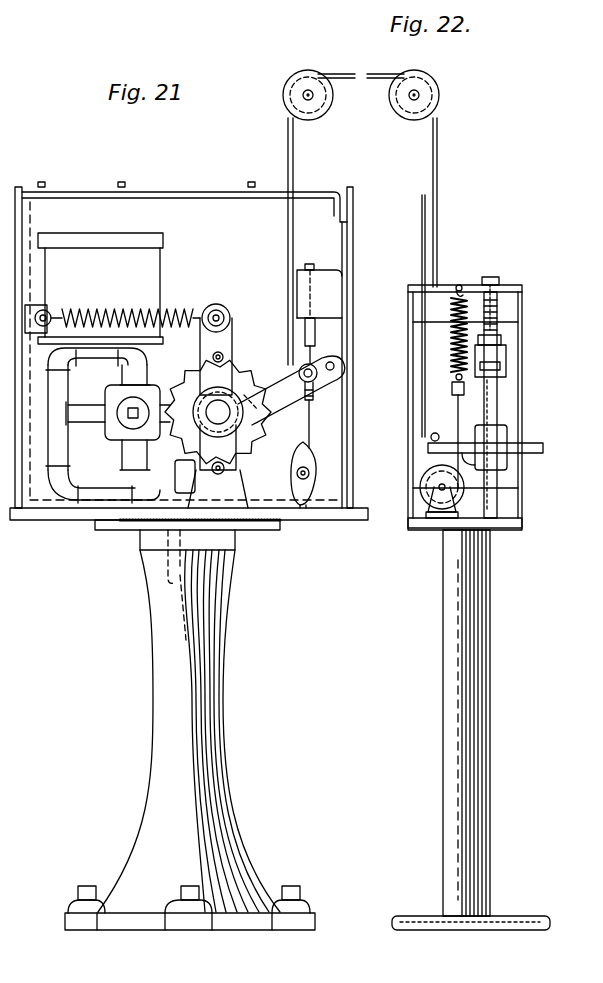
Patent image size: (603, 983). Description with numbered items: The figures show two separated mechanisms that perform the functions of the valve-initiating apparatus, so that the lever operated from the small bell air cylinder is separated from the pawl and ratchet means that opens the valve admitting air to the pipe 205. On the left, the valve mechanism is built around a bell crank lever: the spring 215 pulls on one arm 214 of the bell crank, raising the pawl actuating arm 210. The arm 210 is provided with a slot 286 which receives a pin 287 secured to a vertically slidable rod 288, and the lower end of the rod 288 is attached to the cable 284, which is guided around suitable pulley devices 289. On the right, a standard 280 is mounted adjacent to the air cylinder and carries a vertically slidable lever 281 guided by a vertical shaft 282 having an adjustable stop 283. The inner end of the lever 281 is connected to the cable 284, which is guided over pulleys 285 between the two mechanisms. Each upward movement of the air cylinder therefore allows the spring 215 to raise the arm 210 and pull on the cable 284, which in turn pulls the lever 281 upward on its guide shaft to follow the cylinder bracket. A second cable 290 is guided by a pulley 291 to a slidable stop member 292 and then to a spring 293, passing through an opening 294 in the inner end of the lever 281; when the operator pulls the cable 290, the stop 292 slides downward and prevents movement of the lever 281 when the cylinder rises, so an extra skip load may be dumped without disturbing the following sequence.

In FIG. 21, the pipe 205 is at (130, 416).
In FIG. 21, the pawl actuating arm 210 is at (272, 372).
In FIG. 21, the arm of the bell crank lever 214 is at (228, 327).
In FIG. 21, the spring 215 is at (175, 310).
In FIG. 22, the standard 280 is at (491, 717).
In FIG. 22, the vertically slidable lever 281 is at (535, 443).
In FIG. 22, the vertical shaft 282 is at (497, 406).
In FIG. 22, the adjustable stop 283 is at (497, 348).
In FIG. 22, the cable 284 is at (439, 243).
In FIG. 21, the pulleys 285 is at (305, 72).
In FIG. 22, the pulleys 285 is at (418, 74).
In FIG. 21, the slot 286 is at (318, 374).
In FIG. 21, the pin 287 is at (312, 388).
In FIG. 21, the vertically slidable rod 288 is at (314, 334).
In FIG. 21, the pulley devices 289 is at (318, 478).
In FIG. 22, the cable 290 is at (421, 240).
In FIG. 22, the pulley 291 is at (420, 502).
In FIG. 22, the slidable stop member 292 is at (464, 389).
In FIG. 22, the spring 293 is at (466, 318).
In FIG. 22, the opening 294 is at (497, 471).